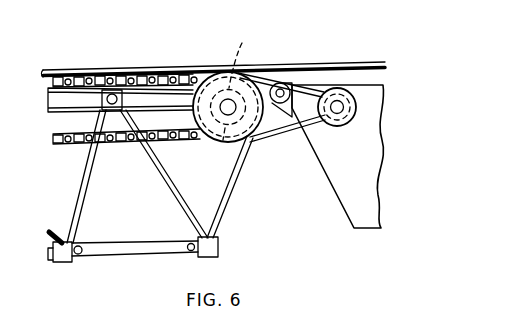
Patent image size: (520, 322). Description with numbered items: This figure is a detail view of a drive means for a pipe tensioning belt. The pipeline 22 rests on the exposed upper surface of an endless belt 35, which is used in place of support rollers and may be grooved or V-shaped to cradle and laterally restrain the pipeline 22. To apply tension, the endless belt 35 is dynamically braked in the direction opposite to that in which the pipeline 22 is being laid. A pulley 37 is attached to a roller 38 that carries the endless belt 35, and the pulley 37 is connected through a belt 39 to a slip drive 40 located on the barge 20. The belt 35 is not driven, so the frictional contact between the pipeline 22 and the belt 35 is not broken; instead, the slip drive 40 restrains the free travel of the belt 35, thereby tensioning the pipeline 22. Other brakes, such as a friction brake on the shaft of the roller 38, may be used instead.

The barge 20 is at (336, 199).
The pipeline 22 is at (315, 62).
The endless belt 35 is at (138, 76).
The pulley 37 is at (222, 146).
The roller 38 is at (245, 86).
The belt 39 is at (268, 140).
The slip drive 40 is at (337, 127).